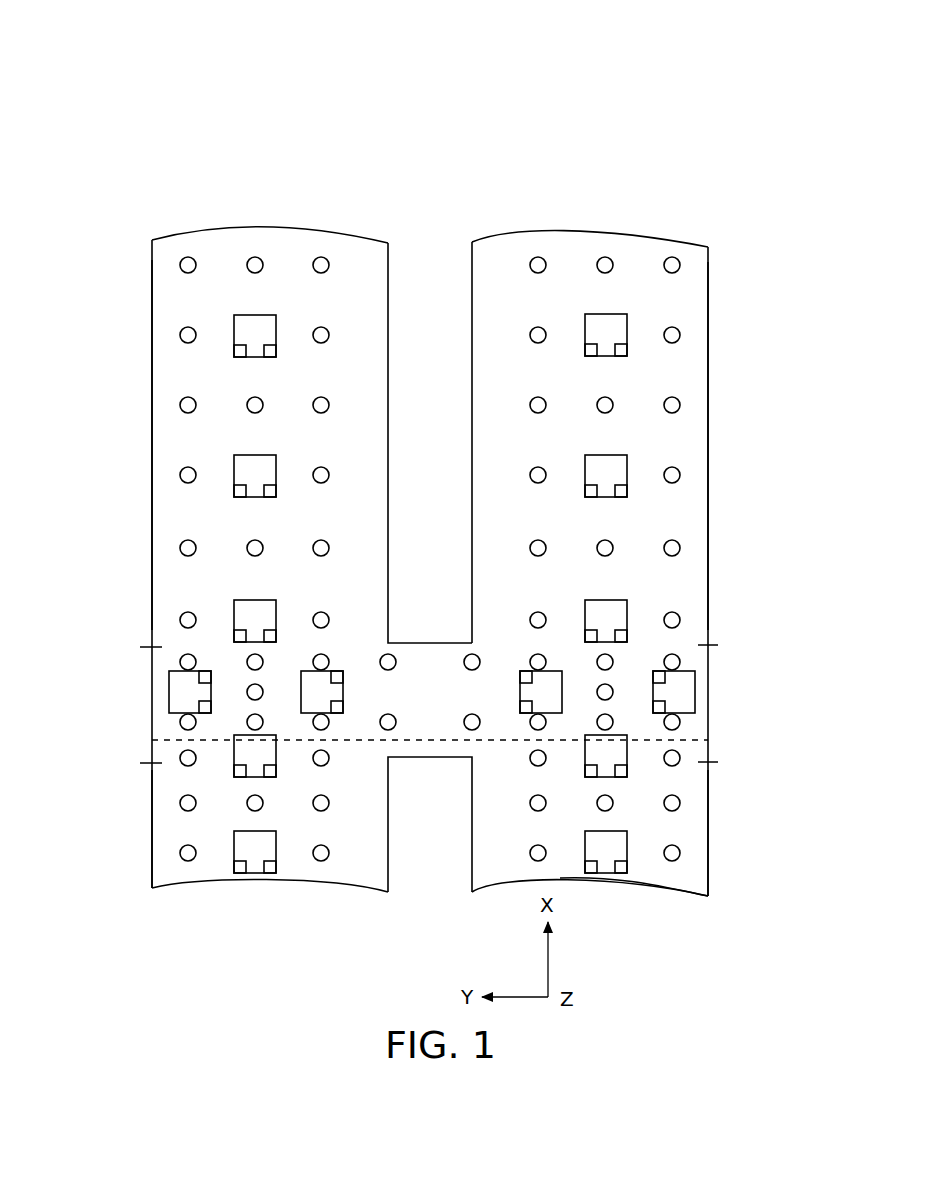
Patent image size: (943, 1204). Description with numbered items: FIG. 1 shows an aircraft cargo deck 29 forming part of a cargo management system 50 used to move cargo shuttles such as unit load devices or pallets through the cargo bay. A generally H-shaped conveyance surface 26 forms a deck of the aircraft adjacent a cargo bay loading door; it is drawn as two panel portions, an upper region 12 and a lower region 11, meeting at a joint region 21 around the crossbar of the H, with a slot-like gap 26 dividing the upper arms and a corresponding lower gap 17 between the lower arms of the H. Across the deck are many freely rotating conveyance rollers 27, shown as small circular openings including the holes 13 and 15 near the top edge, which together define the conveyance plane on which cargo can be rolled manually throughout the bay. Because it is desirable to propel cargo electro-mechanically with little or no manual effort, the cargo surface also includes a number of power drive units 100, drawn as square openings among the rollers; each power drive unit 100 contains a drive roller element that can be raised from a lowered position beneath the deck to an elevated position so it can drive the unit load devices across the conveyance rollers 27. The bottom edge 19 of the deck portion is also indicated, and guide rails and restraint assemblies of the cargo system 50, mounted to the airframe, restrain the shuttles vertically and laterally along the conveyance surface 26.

The cargo management system 50 is at (180, 110).
The lower panel portion 11 is at (137, 844).
The upper panel portion 12 is at (127, 406).
The hole 13 is at (334, 252).
The hole 15 is at (693, 265).
The lower slot 17 is at (355, 866).
The bottom edge 19 is at (679, 884).
The joint region 21 is at (107, 713).
The conveyance surface 26 is at (440, 272).
The conveyance rollers 27 is at (330, 335).
The aircraft cargo deck 29 is at (456, 272).
The power drive units 100 is at (282, 616).